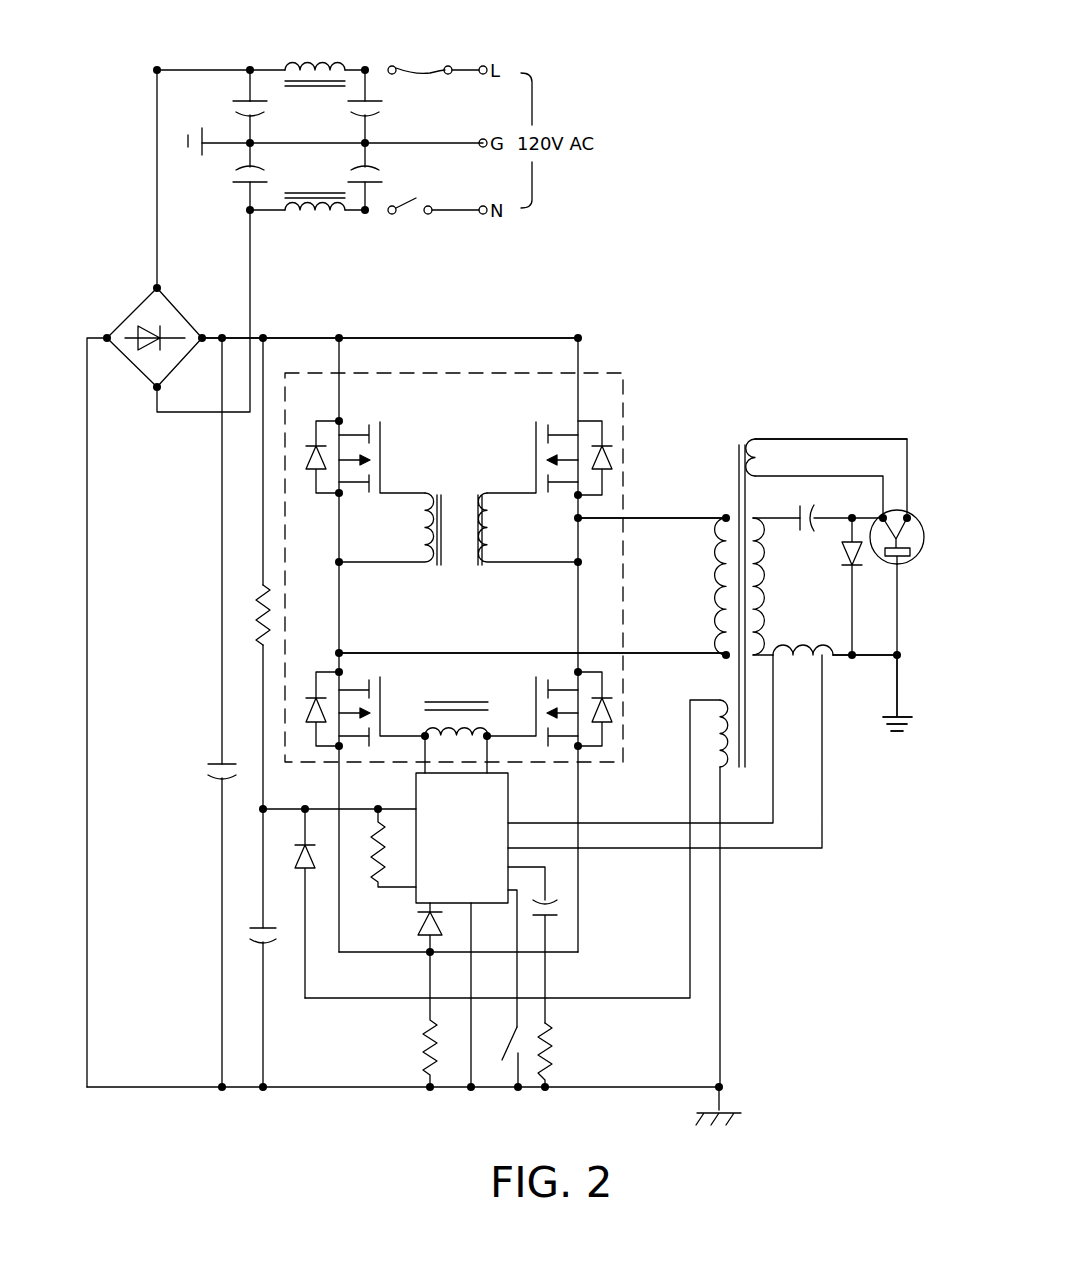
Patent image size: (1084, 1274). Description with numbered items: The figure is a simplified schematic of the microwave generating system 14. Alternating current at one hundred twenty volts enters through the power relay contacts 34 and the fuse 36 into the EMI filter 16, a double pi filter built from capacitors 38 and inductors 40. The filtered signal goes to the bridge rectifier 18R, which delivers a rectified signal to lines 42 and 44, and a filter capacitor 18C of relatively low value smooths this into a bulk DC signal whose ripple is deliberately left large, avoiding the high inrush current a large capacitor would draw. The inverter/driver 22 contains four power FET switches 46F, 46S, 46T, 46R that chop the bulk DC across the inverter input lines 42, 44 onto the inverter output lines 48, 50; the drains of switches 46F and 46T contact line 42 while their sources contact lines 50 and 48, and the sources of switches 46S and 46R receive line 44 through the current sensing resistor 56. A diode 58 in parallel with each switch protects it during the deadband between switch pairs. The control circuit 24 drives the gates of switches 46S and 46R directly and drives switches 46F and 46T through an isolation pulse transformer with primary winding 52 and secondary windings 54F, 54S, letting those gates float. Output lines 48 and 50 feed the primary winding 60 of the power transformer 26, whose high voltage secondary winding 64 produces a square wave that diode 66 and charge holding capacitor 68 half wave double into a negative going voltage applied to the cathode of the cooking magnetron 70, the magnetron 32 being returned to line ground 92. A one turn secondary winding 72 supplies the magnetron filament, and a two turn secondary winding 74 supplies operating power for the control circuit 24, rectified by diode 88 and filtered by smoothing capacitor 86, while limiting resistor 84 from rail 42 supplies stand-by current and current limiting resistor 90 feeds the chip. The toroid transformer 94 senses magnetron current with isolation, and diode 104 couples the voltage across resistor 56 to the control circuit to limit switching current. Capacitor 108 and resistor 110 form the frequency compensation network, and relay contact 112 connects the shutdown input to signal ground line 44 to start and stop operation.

The microwave generating system 14 is at (503, 293).
The EMI filter 16 is at (353, 222).
The bridge rectifier 18R is at (139, 373).
The filter capacitor 18C is at (213, 762).
The inverter/driver 22 is at (480, 373).
The control circuit 24 is at (516, 808).
The power transformer 26 is at (758, 694).
The magnetron 32 is at (910, 500).
The power relay contacts 34 is at (405, 212).
The fuse 36 is at (397, 66).
The capacitors 38 is at (368, 170).
The inductors 40 is at (327, 63).
The inverter input line 42 is at (410, 338).
The inverter input line 44 is at (393, 1088).
The first transistor 46F is at (380, 448).
The third transistor 46T is at (522, 438).
The second transistor 46S is at (383, 708).
The fourth transistor 46R is at (533, 712).
The inverter output line 48 is at (632, 518).
The inverter output line 50 is at (697, 654).
The primary winding 52 is at (443, 703).
The secondary winding 54F is at (440, 535).
The secondary winding 54S is at (480, 535).
The current sensing resistor 56 is at (428, 1047).
The diode 58 is at (312, 471).
The primary winding 60 is at (726, 550).
The high voltage secondary winding 64 is at (753, 532).
The diode 66 is at (841, 560).
The charge holding capacitor 68 is at (805, 525).
The cooking magnetron 70 is at (908, 545).
The low voltage secondary winding 72 is at (764, 440).
The secondary winding 74 is at (732, 768).
The limiting resistor 84 is at (262, 648).
The smoothing capacitor 86 is at (252, 943).
The diode 88 is at (302, 869).
The current limiting resistor 90 is at (378, 883).
The line ground 92 is at (898, 657).
The toroid transformer 94 is at (830, 657).
The diode 104 is at (422, 920).
The capacitor 108 is at (550, 905).
The resistor 110 is at (548, 1047).
The relay contact 112 is at (512, 1050).